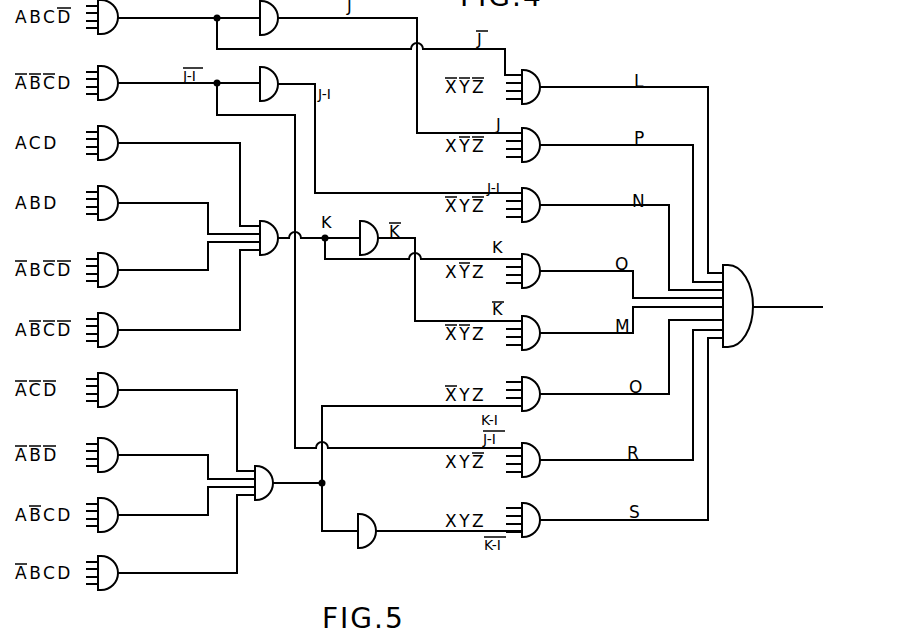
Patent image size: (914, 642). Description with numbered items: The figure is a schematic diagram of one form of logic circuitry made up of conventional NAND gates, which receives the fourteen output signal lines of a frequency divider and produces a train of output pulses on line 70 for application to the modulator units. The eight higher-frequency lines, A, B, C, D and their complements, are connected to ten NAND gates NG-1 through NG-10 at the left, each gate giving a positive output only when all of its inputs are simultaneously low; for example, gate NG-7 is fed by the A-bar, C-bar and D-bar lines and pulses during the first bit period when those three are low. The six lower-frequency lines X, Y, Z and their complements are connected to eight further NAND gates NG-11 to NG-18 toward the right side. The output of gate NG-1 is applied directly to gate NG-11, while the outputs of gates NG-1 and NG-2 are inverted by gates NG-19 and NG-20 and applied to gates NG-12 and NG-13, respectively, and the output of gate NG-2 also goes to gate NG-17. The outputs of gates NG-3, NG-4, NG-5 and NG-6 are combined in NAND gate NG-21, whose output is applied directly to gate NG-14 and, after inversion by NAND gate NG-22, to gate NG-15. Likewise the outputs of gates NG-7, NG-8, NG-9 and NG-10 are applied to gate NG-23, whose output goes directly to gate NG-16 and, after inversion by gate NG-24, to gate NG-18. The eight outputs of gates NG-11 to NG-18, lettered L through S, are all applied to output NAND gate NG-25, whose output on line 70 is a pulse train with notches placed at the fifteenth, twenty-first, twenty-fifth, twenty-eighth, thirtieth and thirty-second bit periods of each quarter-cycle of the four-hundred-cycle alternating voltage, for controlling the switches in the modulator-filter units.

The NAND gate NG-1 is at (116, 0).
The NAND gate NG-2 is at (116, 65).
The NAND gate NG-3 is at (116, 125).
The NAND gate NG-4 is at (116, 185).
The NAND gate NG-5 is at (116, 252).
The NAND gate NG-6 is at (116, 312).
The NAND gate NG-7 is at (116, 372).
The NAND gate NG-8 is at (116, 437).
The NAND gate NG-9 is at (116, 497).
The NAND gate NG-10 is at (116, 555).
The NAND gate NG-11 is at (542, 67).
The NAND gate NG-12 is at (542, 125).
The NAND gate NG-13 is at (542, 185).
The NAND gate NG-14 is at (542, 251).
The NAND gate NG-15 is at (542, 313).
The NAND gate NG-16 is at (542, 374).
The NAND gate NG-17 is at (542, 440).
The NAND gate NG-18 is at (542, 500).
The NAND gate NG-19 is at (278, 0).
The NAND gate NG-20 is at (278, 65).
The NAND gate NG-21 is at (266, 254).
The NAND gate NG-22 is at (377, 219).
The NAND gate NG-23 is at (263, 459).
The NAND gate NG-24 is at (366, 542).
The output NAND gate NG-25 is at (732, 275).
The output line 70 is at (788, 298).